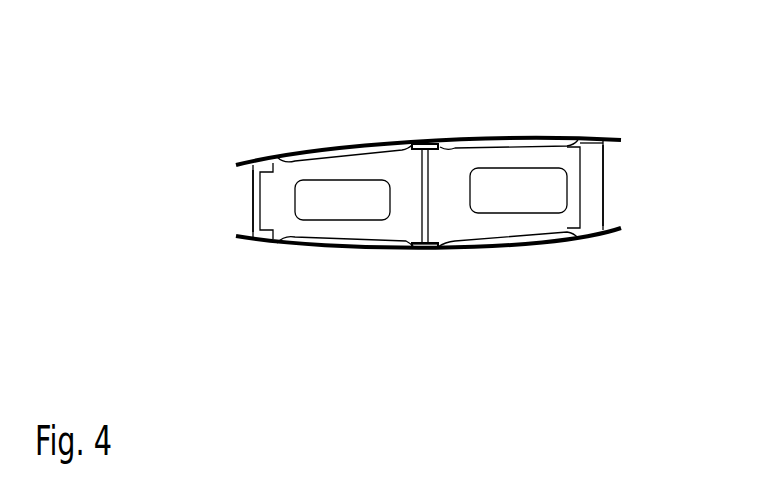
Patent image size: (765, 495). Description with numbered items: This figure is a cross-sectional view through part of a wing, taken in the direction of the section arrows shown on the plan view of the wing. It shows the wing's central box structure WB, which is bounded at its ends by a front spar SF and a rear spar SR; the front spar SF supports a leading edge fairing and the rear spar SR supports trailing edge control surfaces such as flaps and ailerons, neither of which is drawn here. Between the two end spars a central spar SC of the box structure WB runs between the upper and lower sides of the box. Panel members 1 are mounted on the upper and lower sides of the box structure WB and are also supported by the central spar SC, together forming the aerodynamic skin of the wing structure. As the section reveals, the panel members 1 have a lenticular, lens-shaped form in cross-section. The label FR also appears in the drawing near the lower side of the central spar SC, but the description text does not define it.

The panel member 1 is at (337, 151).
The central spar SC is at (428, 172).
The rear spar SR is at (257, 203).
The front spar SF is at (603, 190).
The rib flange region FR is at (445, 220).
The central box structure WB is at (264, 308).